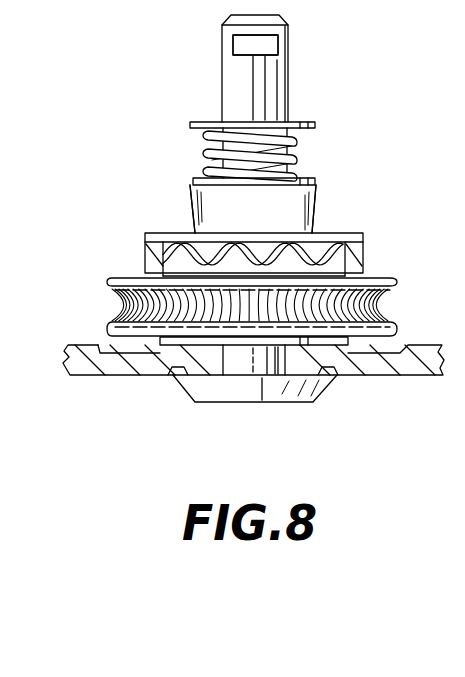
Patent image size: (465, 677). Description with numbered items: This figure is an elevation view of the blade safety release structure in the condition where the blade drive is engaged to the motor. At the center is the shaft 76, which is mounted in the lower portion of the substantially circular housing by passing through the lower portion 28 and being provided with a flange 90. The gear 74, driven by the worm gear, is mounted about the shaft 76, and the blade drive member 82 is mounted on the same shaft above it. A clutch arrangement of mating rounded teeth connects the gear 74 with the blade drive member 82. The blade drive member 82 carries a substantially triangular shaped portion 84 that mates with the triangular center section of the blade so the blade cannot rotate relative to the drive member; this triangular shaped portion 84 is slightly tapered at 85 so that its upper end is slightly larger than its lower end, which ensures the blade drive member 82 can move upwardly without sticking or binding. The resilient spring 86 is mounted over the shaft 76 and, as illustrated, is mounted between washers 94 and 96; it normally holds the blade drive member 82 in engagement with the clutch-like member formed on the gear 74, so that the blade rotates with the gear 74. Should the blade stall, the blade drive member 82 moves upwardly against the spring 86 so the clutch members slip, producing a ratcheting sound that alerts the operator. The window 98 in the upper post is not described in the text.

The lower portion 28 is at (65, 373).
The gear 74 is at (125, 307).
The shaft 76 is at (290, 67).
The blade drive member 82 is at (368, 236).
The triangular shaped portion 84 is at (318, 184).
The taper 85 is at (318, 207).
The spring 86 is at (297, 140).
The flange 90 is at (208, 403).
The washer 94 is at (190, 125).
The washer 96 is at (193, 185).
The window 98 is at (247, 42).